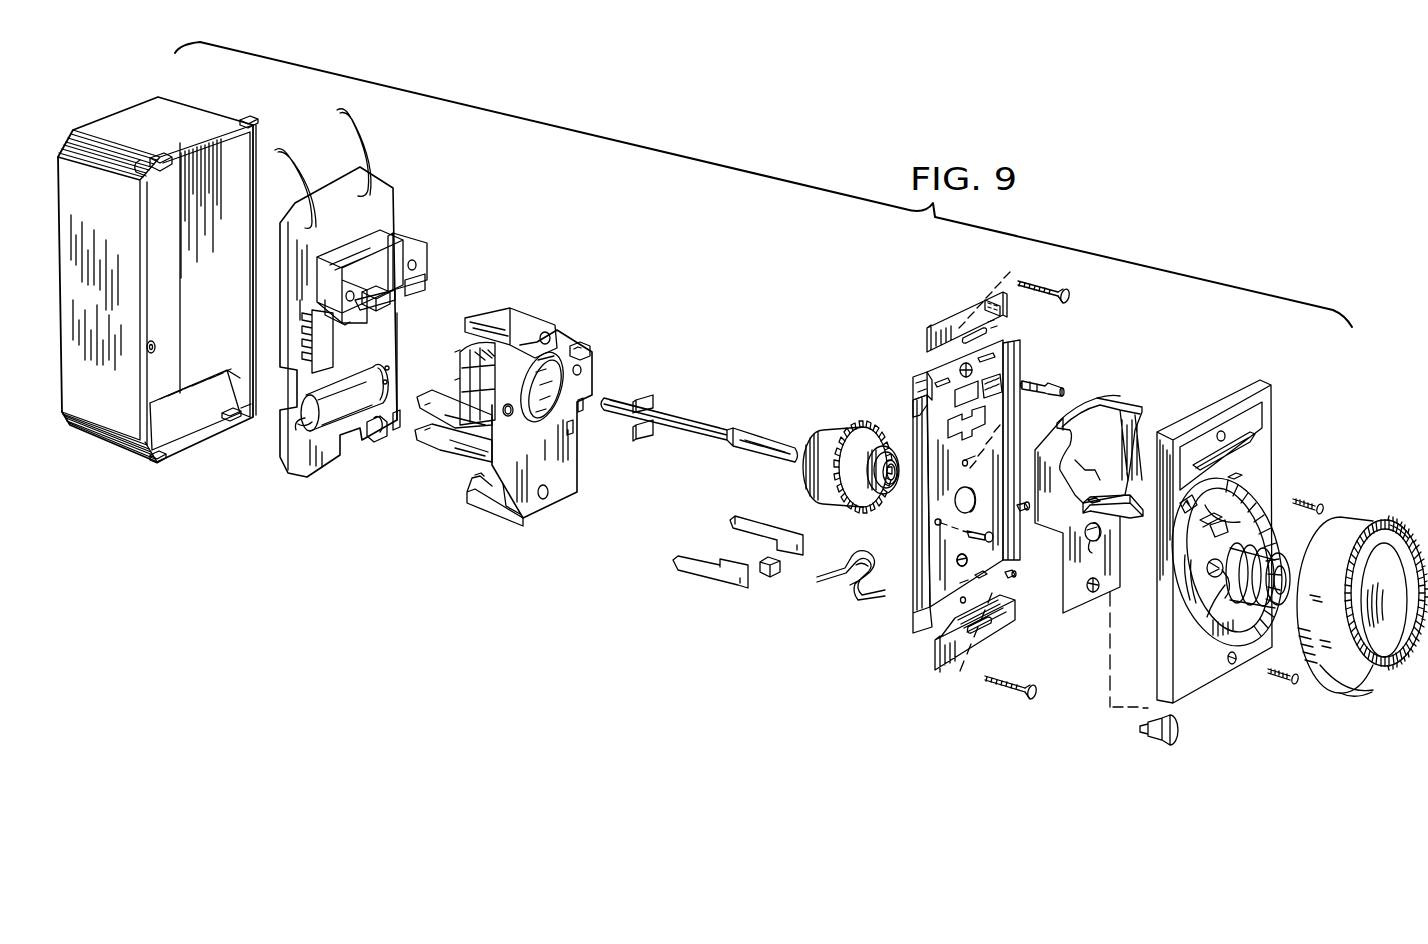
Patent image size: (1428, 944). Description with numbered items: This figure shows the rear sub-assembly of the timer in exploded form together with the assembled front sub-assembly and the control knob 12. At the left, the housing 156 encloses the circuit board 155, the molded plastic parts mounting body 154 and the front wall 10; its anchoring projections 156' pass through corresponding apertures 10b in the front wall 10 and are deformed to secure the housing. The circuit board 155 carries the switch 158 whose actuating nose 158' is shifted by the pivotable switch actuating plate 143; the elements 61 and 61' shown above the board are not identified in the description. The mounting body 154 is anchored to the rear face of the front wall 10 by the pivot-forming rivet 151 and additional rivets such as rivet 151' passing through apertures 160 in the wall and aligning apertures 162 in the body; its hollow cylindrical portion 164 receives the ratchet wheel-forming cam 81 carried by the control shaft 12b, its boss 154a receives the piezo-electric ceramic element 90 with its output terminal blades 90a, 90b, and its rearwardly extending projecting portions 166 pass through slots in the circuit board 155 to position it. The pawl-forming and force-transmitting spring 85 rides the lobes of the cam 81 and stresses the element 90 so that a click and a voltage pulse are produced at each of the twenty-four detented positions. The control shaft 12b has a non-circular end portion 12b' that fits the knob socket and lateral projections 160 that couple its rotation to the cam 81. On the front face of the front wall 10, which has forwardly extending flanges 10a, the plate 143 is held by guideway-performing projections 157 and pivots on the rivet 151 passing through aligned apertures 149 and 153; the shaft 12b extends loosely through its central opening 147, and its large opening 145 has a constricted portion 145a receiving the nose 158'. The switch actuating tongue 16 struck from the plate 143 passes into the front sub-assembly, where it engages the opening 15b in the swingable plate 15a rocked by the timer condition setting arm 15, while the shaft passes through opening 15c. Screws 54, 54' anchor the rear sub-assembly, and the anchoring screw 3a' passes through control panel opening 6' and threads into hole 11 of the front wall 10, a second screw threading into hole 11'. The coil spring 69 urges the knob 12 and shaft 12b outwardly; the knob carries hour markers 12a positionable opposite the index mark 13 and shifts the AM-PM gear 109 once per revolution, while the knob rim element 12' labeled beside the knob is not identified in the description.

The housing 156 is at (157, 306).
The anchoring projections 156' is at (200, 294).
The lead wire 61 is at (369, 153).
The lead wire 61' is at (311, 180).
The circuit board 155 is at (390, 198).
The switch 158 is at (360, 264).
The actuating nose 158' is at (409, 256).
The parts mounting body 154 is at (538, 527).
The boss 154a is at (472, 362).
The hollow cylindrical portion 164 is at (555, 360).
The aligning apertures 162 is at (508, 415).
The rearwardly extending projecting portions 166 is at (448, 450).
The lateral projections 160 is at (975, 512).
The control shaft 12b is at (699, 429).
The non-circular end portion 12b' is at (783, 430).
The ratchet wheel-forming cam 81 is at (829, 419).
The guideway-performing projections 157 is at (941, 384).
The front wall 10 is at (940, 490).
The flanges 10a is at (913, 604).
The apertures 10b is at (912, 638).
The screw 54 is at (1057, 280).
The screw 54' is at (1006, 700).
The hole 11 is at (985, 456).
The hole 11' is at (983, 576).
The aperture 153 is at (959, 563).
The pivot-forming rivet 151 is at (1187, 738).
The rivet 151' is at (1038, 559).
The switch actuating plate 143 is at (1063, 613).
The large opening 145 is at (1105, 402).
The constricted portion 145a is at (1112, 397).
The switch actuating tongue 16 is at (1125, 517).
The central opening 147 is at (1105, 547).
The aperture 149 is at (1095, 592).
The opening 15b is at (1112, 592).
The timer condition setting arm 15 is at (1250, 420).
The index mark 13 is at (1245, 480).
The opening 15c is at (1215, 581).
The swingable plate 15a is at (1207, 617).
The coil spring 69 is at (1285, 548).
The AM-PM gear 109 is at (1228, 530).
The anchoring screw 3a' is at (1301, 689).
The control panel opening 6' is at (1251, 676).
The control knob 12 is at (1362, 592).
The knob rim 12' is at (1409, 524).
The hour indicating markers 12a is at (1378, 688).
The piezo-electric ceramic element 90 is at (774, 578).
The output terminal blade 90a is at (690, 575).
The output terminal blade 90b is at (742, 520).
The pawl-forming and force-transmitting spring 85 is at (838, 605).